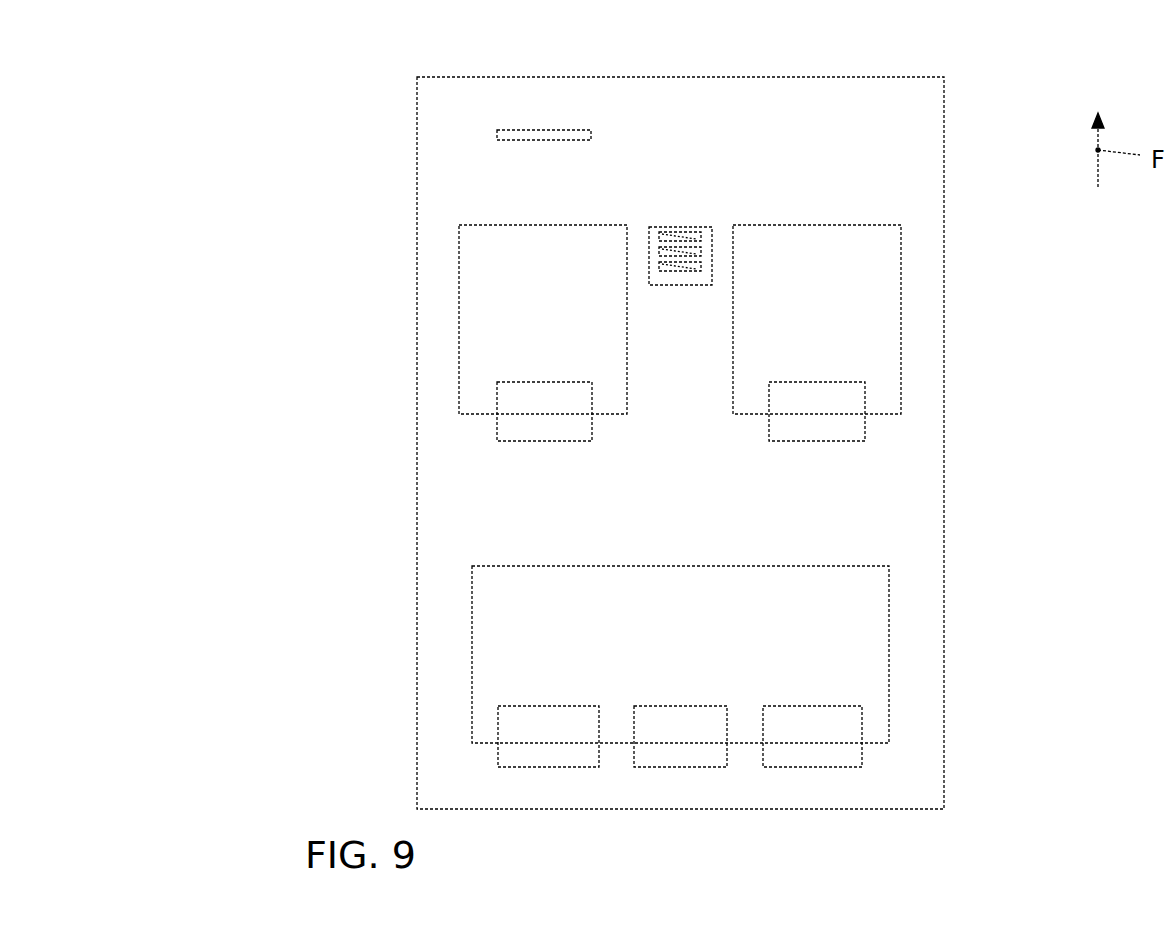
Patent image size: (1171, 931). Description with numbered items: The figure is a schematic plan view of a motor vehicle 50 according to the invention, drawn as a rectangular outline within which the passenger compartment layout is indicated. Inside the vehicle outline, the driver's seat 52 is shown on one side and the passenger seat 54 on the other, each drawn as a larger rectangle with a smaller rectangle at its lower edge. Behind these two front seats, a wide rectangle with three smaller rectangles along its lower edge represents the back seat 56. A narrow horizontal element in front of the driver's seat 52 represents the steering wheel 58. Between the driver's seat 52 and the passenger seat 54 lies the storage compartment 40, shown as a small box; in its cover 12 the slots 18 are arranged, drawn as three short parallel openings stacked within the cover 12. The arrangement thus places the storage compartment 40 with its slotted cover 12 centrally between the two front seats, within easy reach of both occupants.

The cover 12 is at (653, 237).
The slots 18 is at (697, 267).
The storage compartment 40 is at (688, 196).
The motor vehicle 50 is at (1050, 433).
The driver's seat 52 is at (498, 313).
The passenger seat 54 is at (867, 297).
The back seat 56 is at (867, 637).
The steering wheel 58 is at (541, 132).